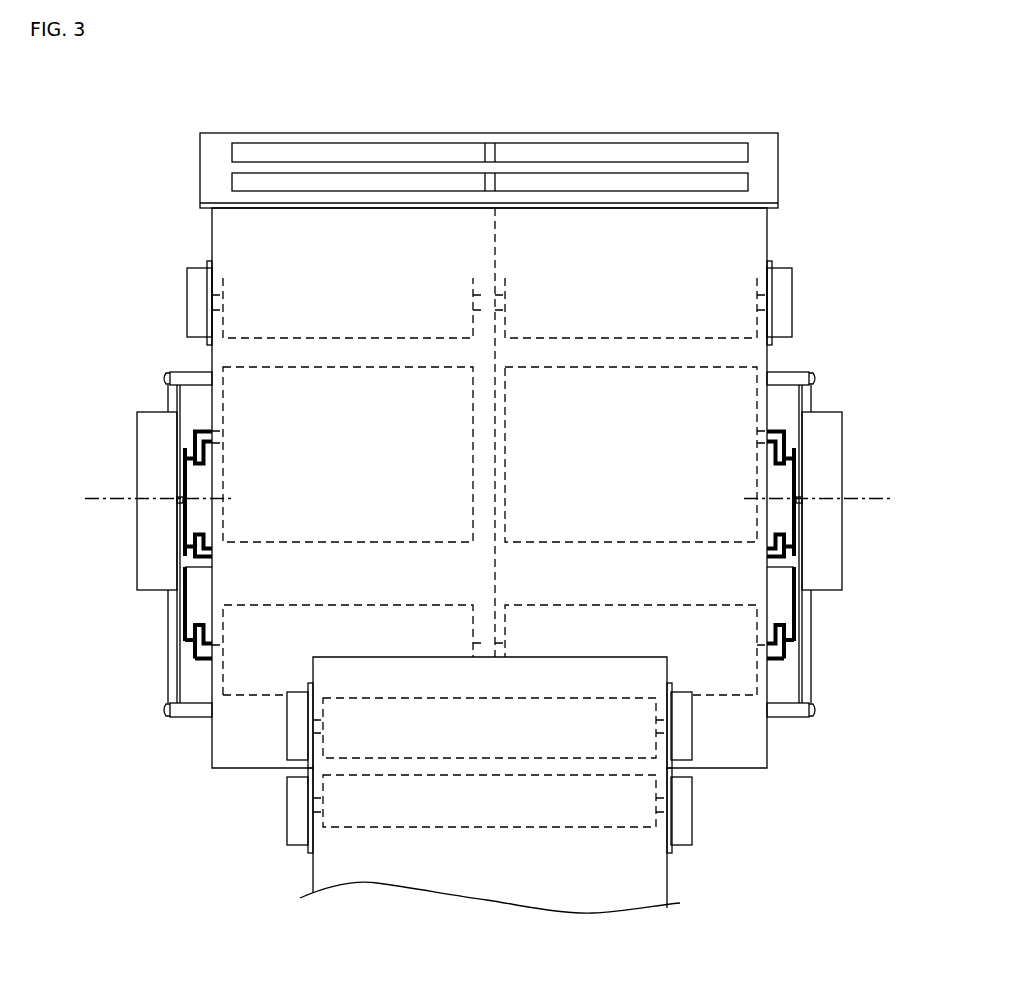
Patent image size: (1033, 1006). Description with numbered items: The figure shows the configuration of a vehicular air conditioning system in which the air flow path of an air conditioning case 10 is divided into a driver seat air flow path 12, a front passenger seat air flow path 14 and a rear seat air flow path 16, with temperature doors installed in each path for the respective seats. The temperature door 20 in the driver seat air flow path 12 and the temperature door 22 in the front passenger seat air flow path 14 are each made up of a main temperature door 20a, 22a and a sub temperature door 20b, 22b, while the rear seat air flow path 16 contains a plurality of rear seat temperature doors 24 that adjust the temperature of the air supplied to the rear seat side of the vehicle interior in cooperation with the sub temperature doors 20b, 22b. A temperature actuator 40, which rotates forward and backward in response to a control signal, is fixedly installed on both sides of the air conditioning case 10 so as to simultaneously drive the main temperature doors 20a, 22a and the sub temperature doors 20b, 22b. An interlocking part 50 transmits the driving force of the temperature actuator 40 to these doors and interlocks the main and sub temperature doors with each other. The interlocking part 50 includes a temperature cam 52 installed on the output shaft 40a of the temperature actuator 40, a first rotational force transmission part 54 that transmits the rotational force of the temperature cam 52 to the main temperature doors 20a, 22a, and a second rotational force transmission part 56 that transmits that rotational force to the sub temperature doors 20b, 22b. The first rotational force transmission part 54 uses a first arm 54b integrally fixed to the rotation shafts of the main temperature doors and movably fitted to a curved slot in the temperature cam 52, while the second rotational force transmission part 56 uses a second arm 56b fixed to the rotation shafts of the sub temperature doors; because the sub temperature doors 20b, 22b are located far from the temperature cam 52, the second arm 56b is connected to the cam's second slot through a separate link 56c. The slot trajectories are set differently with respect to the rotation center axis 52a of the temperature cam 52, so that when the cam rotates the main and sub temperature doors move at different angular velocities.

The air conditioning case 10 is at (524, 119).
The driver seat air flow path 12 is at (338, 250).
The front passenger seat air flow path 14 is at (637, 250).
The rear seat air flow path 16 is at (496, 870).
The temperature door 20 is at (321, 644).
The main temperature door 20a is at (252, 543).
The sub temperature door 20b is at (261, 696).
The temperature door 22 is at (658, 644).
The main temperature door 22a is at (727, 543).
The sub temperature door 22b is at (718, 696).
The rear seat temperature door 24 is at (565, 828).
The temperature actuator 40 is at (153, 568).
The output shaft 40a is at (178, 503).
The interlocking part 50 is at (180, 405).
The temperature cam 52 is at (184, 462).
The rotation center axis 52a is at (105, 500).
The first rotational force transmission part 54 is at (489, 447).
The first arm 54b is at (193, 432).
The second rotational force transmission part 56 is at (489, 603).
The second arm 56b is at (489, 597).
The link 56c is at (194, 647).